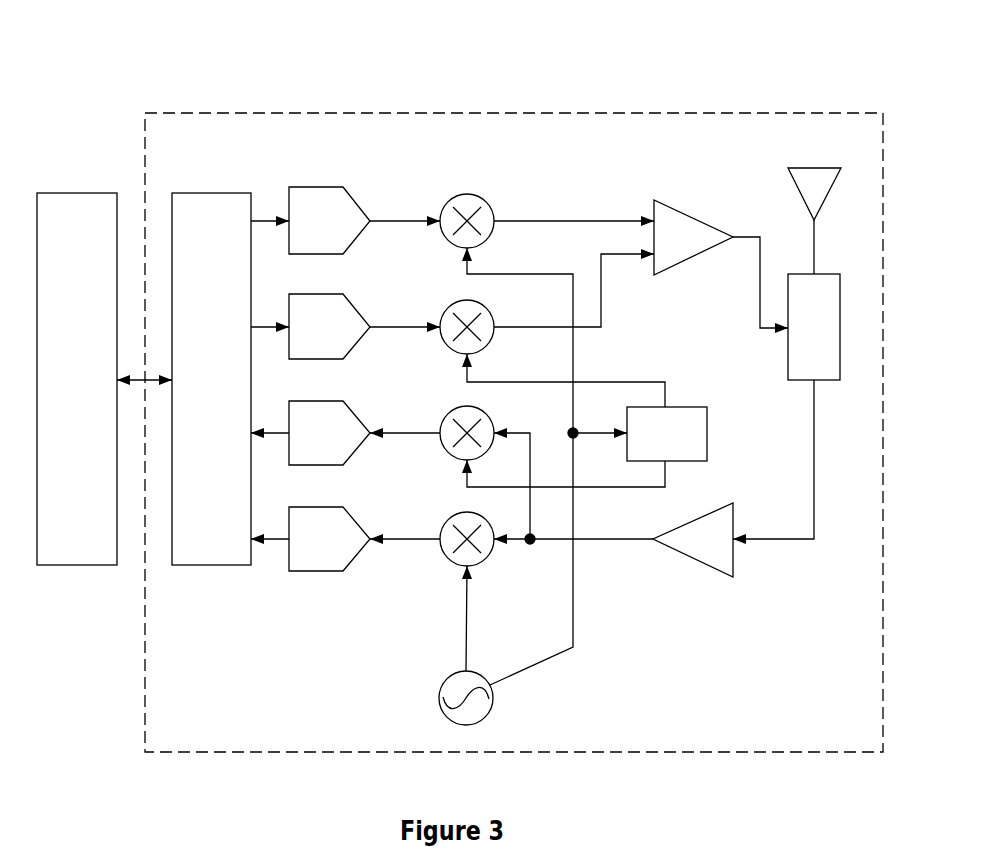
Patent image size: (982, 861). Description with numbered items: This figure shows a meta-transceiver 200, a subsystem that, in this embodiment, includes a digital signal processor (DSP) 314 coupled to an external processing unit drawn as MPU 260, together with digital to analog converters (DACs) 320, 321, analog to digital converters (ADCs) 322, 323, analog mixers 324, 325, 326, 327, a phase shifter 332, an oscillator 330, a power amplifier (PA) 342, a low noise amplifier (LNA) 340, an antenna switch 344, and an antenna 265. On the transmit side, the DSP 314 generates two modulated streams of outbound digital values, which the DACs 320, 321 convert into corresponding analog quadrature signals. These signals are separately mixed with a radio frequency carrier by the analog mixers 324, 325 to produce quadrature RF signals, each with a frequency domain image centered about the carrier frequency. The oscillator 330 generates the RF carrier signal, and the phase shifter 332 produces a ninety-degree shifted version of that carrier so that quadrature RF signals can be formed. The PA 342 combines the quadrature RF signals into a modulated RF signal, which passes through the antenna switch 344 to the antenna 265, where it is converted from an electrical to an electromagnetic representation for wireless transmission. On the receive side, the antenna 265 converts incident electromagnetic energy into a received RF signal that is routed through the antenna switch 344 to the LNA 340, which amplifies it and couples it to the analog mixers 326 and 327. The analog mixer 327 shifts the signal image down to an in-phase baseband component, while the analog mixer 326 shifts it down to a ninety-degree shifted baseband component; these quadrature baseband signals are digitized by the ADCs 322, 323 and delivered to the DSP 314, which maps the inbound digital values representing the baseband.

The meta-transceiver 200 is at (591, 113).
The MPU 260 is at (59, 404).
The digital signal processor 314 is at (193, 404).
The digital to analog converter 320 is at (302, 244).
The digital to analog converter 321 is at (302, 351).
The analog to digital converter 322 is at (302, 457).
The analog to digital converter 323 is at (302, 563).
The analog mixer 324 is at (452, 198).
The analog mixer 325 is at (452, 304).
The analog mixer 326 is at (452, 410).
The analog mixer 327 is at (452, 516).
The oscillator 330 is at (443, 690).
The phase shifter 332 is at (649, 445).
The low noise amplifier 340 is at (714, 568).
The power amplifier 342 is at (678, 200).
The antenna switch 344 is at (796, 339).
The antenna 265 is at (793, 180).